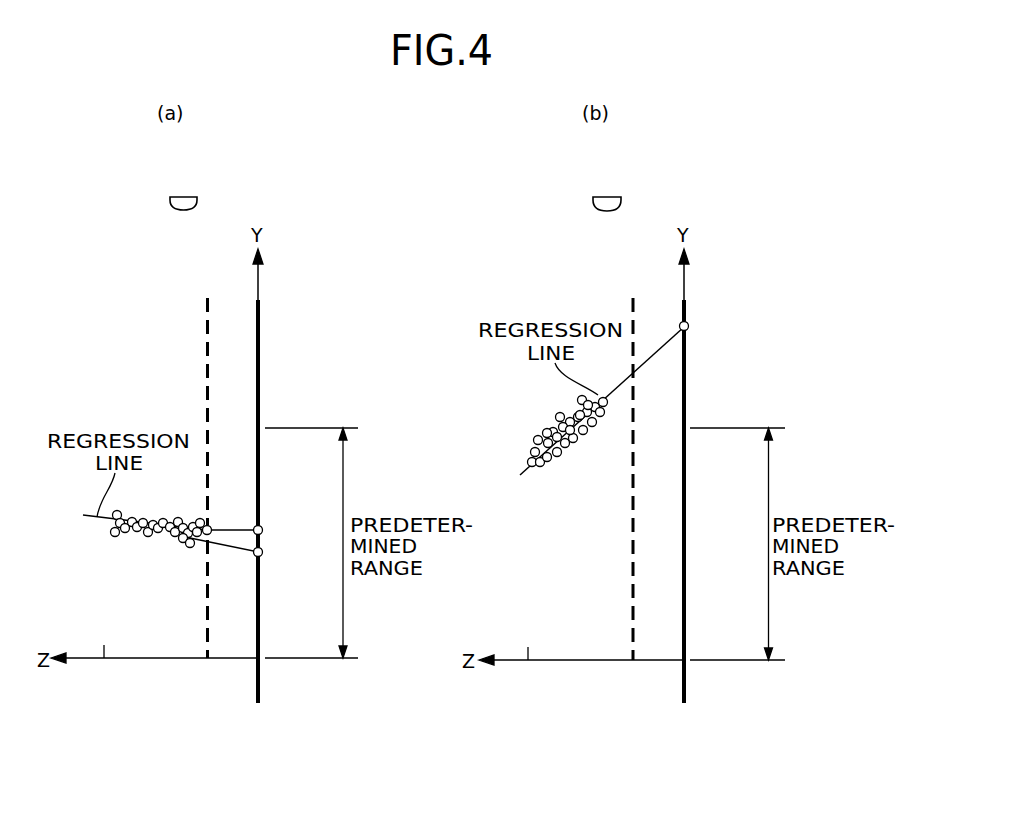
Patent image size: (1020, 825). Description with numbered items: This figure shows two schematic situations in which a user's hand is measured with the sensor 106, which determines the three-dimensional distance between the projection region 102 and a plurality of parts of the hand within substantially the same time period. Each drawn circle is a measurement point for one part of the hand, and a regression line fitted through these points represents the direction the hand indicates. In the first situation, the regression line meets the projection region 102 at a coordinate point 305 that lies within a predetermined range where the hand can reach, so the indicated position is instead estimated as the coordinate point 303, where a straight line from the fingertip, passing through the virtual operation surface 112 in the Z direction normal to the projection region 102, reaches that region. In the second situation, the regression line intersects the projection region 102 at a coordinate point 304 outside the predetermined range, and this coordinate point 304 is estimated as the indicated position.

The sensor 106 is at (177, 194).
The projection region 102 is at (260, 592).
The virtual operation surface 112 is at (208, 630).
The coordinate point 303 is at (263, 530).
The coordinate point 305 is at (263, 552).
The coordinate point 304 is at (689, 326).